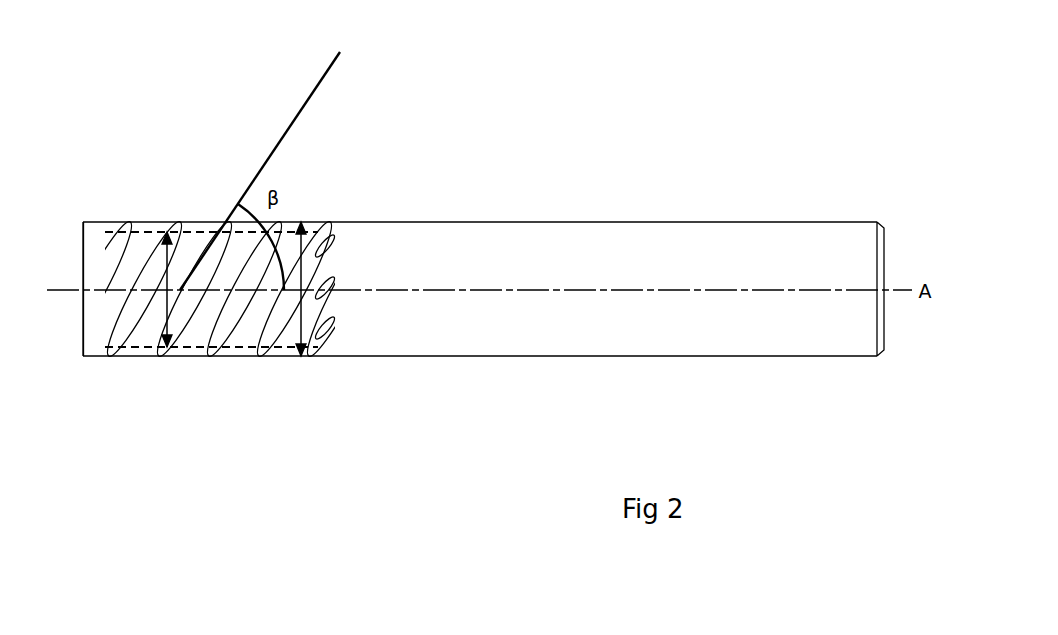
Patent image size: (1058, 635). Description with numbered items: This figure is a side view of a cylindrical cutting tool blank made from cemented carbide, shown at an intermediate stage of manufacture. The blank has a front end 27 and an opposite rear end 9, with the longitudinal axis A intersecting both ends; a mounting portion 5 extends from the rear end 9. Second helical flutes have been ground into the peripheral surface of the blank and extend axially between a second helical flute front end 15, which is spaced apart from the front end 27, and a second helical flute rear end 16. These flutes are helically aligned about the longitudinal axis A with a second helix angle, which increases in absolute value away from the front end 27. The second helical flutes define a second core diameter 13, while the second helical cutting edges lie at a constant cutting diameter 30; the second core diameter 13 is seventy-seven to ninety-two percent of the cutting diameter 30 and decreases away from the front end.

The mounting portion 5 is at (480, 289).
The rear end 9 is at (885, 247).
The second core diameter 13 is at (154, 289).
The second helical flute front end 15 is at (107, 375).
The second helical flute rear end 16 is at (332, 382).
The front end 27 is at (84, 375).
The cutting diameter 30 is at (313, 289).